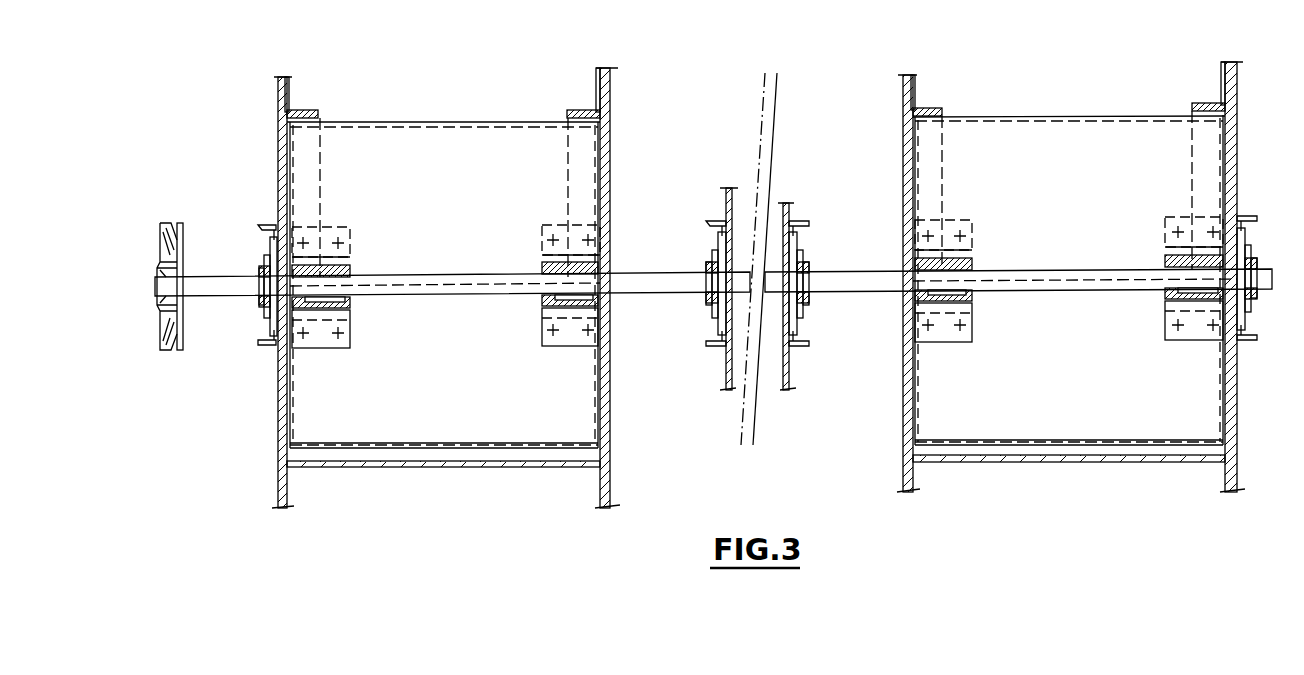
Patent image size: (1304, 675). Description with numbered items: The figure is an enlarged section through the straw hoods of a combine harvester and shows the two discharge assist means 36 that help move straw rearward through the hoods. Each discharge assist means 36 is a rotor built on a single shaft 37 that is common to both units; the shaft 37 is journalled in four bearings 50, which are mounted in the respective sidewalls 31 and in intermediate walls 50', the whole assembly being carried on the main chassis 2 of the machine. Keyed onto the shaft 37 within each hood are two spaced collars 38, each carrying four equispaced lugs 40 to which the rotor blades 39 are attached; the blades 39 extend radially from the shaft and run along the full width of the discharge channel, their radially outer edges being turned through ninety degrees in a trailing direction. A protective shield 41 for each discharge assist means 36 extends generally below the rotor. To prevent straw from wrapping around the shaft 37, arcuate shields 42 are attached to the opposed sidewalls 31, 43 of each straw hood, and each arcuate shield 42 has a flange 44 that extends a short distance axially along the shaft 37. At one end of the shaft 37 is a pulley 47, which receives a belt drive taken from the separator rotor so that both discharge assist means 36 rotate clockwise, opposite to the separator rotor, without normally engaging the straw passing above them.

The main chassis 2 is at (262, 346).
The sidewall 31 is at (278, 138).
The discharge assist means 36 is at (462, 100).
The shaft 37 is at (642, 274).
The collar 38 is at (542, 300).
The rotor blade 39 is at (464, 204).
The lug 40 is at (542, 268).
The protective shield 41 is at (402, 467).
The arcuate shield 42 is at (290, 102).
The sidewall 43 is at (610, 128).
The flange 44 is at (312, 112).
The pulley 47 is at (183, 232).
The bearing 50 is at (751, 307).
The intermediate wall 50' is at (769, 273).